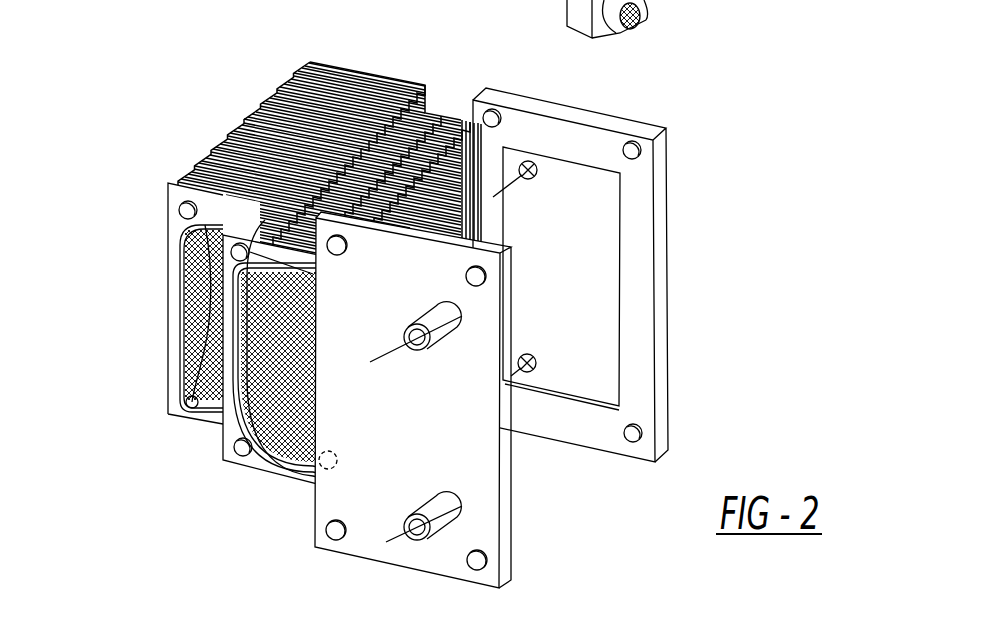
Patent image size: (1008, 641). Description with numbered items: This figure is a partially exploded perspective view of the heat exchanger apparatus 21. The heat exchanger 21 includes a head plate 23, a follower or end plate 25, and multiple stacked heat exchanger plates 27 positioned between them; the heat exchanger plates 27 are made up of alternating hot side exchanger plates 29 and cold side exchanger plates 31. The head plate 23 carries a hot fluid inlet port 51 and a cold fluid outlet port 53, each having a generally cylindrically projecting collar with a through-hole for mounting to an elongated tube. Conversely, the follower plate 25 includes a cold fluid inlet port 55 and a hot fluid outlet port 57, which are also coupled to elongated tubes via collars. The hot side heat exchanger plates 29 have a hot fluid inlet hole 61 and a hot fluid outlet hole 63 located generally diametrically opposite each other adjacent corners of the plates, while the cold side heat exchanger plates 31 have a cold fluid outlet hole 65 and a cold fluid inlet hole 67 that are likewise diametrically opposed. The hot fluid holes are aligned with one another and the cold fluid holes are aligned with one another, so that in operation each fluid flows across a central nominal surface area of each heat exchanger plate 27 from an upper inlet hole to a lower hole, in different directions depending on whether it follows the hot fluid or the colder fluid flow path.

The heat exchanger apparatus 21 is at (700, 126).
The head plate 23 is at (473, 467).
The follower plate 25 is at (616, 262).
The heat exchanger plates 27 is at (243, 132).
The hot side exchanger plates 29 is at (203, 442).
The cold side exchanger plates 31 is at (243, 478).
The hot fluid inlet port 51 is at (422, 314).
The cold fluid outlet port 53 is at (428, 498).
The cold fluid inlet port 55 is at (535, 172).
The hot fluid outlet port 57 is at (535, 360).
The hot fluid inlet hole 61 is at (264, 220).
The hot fluid outlet hole 63 is at (202, 414).
The cold fluid outlet hole 65 is at (268, 222).
The cold fluid inlet hole 67 is at (328, 470).